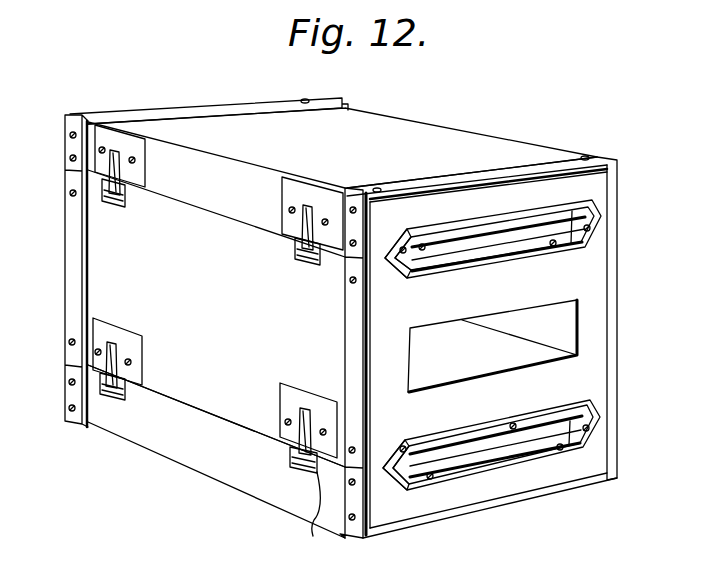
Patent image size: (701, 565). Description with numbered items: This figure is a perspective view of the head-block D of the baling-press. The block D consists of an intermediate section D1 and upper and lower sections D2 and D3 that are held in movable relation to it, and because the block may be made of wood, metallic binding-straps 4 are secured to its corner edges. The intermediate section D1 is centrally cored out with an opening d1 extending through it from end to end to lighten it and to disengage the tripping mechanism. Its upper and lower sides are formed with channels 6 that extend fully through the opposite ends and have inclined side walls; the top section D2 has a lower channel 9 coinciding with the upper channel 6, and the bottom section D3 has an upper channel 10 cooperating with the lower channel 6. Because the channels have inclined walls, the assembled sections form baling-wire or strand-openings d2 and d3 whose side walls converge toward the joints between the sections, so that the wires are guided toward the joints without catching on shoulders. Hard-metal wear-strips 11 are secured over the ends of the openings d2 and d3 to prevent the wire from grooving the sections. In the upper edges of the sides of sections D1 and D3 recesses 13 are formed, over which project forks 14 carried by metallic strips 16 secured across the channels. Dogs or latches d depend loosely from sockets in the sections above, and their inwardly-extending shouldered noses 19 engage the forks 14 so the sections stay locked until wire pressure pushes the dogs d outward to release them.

The metallic binding-straps 4 is at (165, 115).
The channels 6 is at (533, 263).
The lower channel 9 is at (493, 237).
The upper channel 10 is at (560, 440).
The metallic wear-strips 11 is at (485, 243).
The recesses 13 is at (100, 393).
The forks 14 is at (113, 183).
The metallic strips 16 is at (420, 249).
The shouldered noses 19 is at (303, 463).
The dogs or latches d is at (114, 200).
The opening d1 is at (492, 346).
The baling-wire or strand-opening d2 is at (507, 227).
The baling-wire or strand-opening d3 is at (487, 440).
The block D is at (482, 316).
The intermediate section D1 is at (216, 318).
The top section D2 is at (342, 148).
The bottom section D3 is at (216, 451).